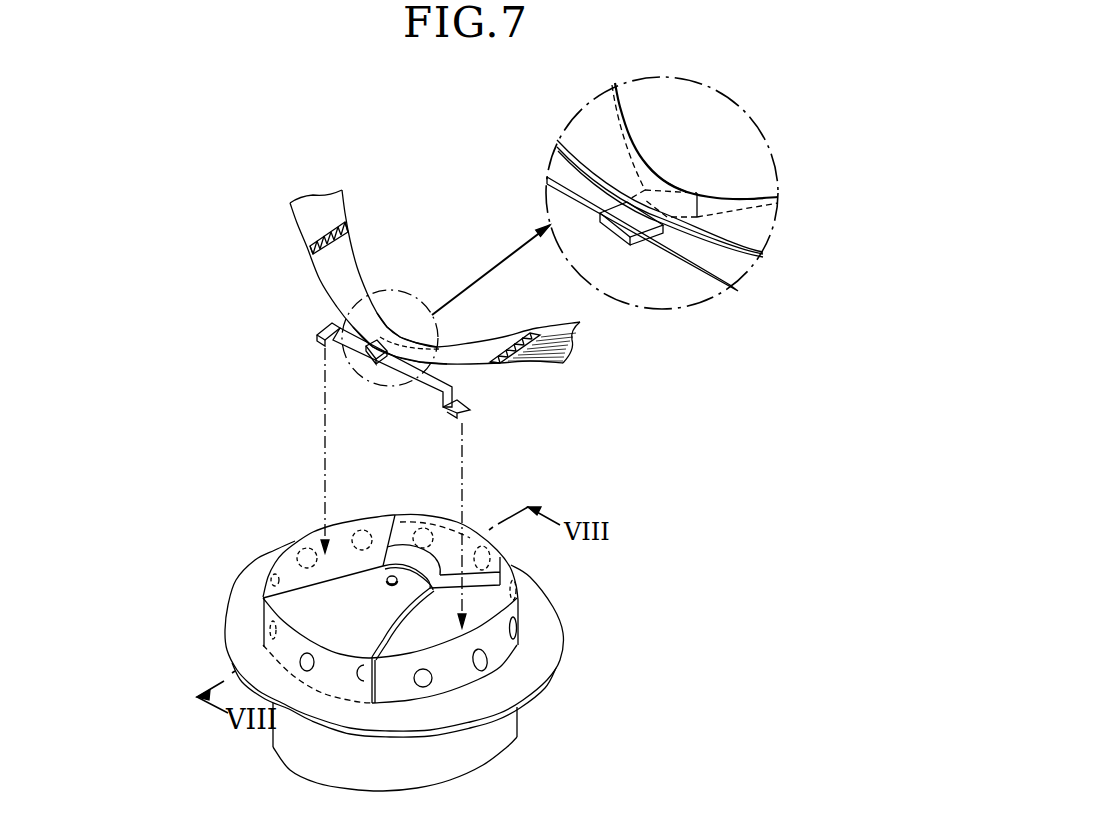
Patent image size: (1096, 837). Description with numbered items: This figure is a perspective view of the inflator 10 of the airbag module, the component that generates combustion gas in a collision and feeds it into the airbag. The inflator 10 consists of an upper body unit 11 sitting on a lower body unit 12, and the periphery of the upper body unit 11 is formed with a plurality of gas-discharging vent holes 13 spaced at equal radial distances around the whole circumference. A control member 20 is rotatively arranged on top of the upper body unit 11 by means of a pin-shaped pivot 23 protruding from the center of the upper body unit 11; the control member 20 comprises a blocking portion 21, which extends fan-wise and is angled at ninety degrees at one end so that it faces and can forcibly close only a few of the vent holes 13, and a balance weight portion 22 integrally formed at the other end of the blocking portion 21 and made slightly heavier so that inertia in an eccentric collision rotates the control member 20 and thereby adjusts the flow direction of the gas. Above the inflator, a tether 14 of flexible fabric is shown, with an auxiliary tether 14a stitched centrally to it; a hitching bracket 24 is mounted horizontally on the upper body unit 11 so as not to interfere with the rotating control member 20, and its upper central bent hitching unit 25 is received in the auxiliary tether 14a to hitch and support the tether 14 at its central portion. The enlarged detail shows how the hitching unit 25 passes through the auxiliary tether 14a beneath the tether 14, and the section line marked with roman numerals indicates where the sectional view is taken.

The inflator 10 is at (459, 652).
The upper body unit 11 is at (517, 610).
The lower body unit 12 is at (503, 722).
The vent holes 13 is at (490, 656).
The tether 14 is at (333, 213).
The auxiliary tether 14a is at (352, 287).
The control member 20 is at (334, 546).
The blocking portion 21 is at (317, 607).
The balance weight portion 22 is at (403, 527).
The pin-shaped pivot 23 is at (390, 578).
The hitching bracket 24 is at (320, 331).
The hitching unit 25 is at (356, 369).